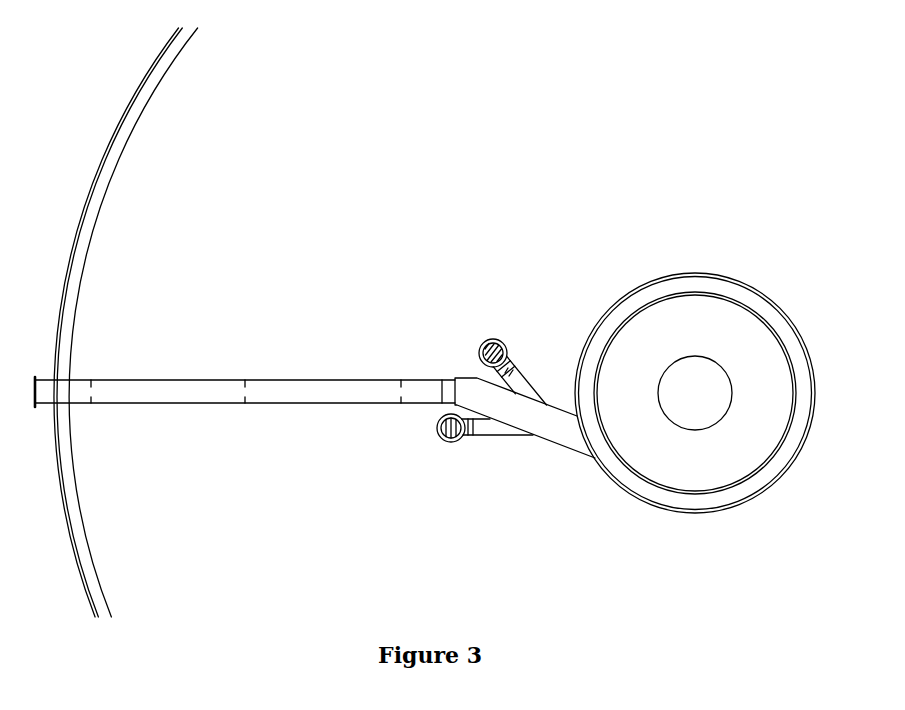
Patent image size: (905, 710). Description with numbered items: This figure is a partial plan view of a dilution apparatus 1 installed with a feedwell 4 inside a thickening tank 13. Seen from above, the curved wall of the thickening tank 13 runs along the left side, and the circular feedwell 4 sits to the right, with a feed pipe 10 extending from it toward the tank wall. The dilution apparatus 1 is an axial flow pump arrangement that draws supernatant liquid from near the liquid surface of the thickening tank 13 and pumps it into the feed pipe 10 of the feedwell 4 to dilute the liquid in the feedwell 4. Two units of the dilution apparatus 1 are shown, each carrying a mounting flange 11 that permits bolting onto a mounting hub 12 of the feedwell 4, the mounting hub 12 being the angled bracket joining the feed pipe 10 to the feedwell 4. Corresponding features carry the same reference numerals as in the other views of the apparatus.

The dilution apparatus 1 is at (493, 338).
The feedwell 4 is at (720, 468).
The feed pipe 10 is at (300, 405).
The mounting flange 11 is at (518, 372).
The mounting hub 12 is at (548, 433).
The thickening tank 13 is at (138, 93).